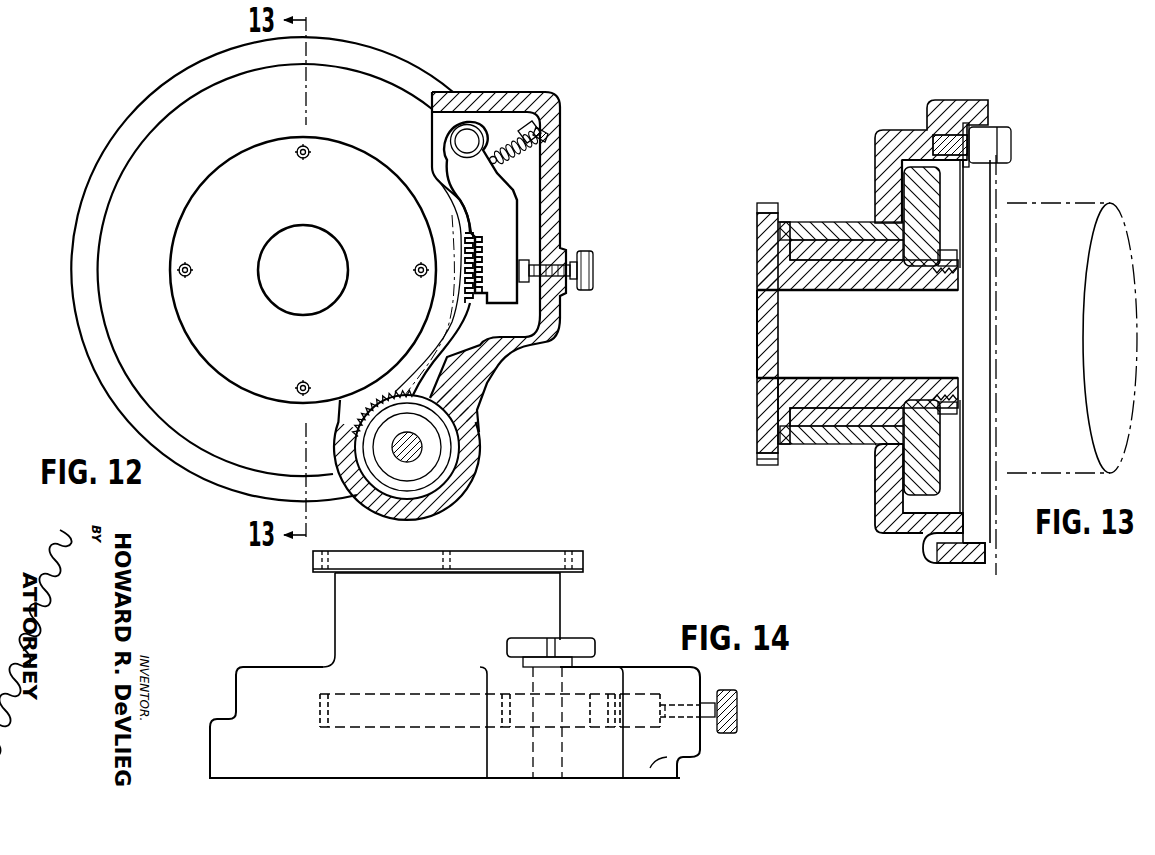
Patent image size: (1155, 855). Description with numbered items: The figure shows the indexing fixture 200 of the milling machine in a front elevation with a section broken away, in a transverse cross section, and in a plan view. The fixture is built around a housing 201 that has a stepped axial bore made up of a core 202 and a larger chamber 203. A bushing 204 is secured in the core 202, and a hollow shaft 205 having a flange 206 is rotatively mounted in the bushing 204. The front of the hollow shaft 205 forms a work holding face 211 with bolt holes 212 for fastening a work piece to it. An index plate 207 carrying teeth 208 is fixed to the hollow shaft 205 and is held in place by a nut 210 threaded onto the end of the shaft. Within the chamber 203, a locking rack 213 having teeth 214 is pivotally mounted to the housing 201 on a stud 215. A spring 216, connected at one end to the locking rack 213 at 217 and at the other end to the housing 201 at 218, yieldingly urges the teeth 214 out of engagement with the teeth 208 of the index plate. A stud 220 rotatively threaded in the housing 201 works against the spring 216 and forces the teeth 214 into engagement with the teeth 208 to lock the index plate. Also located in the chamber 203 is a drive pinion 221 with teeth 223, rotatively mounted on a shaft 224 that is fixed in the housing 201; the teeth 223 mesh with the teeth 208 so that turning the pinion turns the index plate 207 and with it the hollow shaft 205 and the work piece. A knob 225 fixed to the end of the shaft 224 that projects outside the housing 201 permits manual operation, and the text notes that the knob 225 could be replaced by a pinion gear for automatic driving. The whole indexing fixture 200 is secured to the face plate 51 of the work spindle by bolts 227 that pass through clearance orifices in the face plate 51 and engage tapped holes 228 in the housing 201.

In FIG. 13, the face plate 51 is at (990, 385).
In FIG. 12, the indexing fixture 200 is at (537, 371).
In FIG. 13, the indexing fixture 200 is at (722, 308).
In FIG. 13, the housing 201 is at (958, 558).
In FIG. 13, the core 202 is at (805, 242).
In FIG. 12, the chamber 203 is at (528, 188).
In FIG. 13, the chamber 203 is at (950, 187).
In FIG. 13, the bushing 204 is at (832, 252).
In FIG. 13, the hollow shaft 205 is at (773, 272).
In FIG. 12, the flange 206 is at (262, 269).
In FIG. 14, the flange 206 is at (583, 562).
In FIG. 13, the flange 206 is at (778, 203).
In FIG. 13, the index plate 207 is at (915, 188).
In FIG. 12, the teeth 208 is at (482, 343).
In FIG. 13, the teeth 208 is at (882, 524).
In FIG. 13, the nut 210 is at (946, 250).
In FIG. 13, the work holding face 211 is at (757, 396).
In FIG. 12, the bolt holes 212 is at (312, 149).
In FIG. 14, the bolt holes 212 is at (347, 558).
In FIG. 13, the bolt holes 212 is at (757, 453).
In FIG. 12, the locking rack 213 is at (508, 280).
In FIG. 12, the teeth 214 is at (485, 238).
In FIG. 12, the stud 215 is at (468, 126).
In FIG. 12, the spring 216 is at (538, 165).
In FIG. 12, the spring connection on locking rack 217 is at (515, 122).
In FIG. 12, the spring connection on housing 218 is at (546, 136).
In FIG. 12, the stud 220 is at (561, 297).
In FIG. 14, the stud 220 is at (730, 693).
In FIG. 12, the drive pinion 221 is at (434, 463).
In FIG. 12, the teeth 223 is at (355, 468).
In FIG. 12, the shaft 224 is at (423, 445).
In FIG. 14, the knob 225 is at (582, 640).
In FIG. 13, the bolts 227 is at (1012, 133).
In FIG. 13, the tapped holes 228 is at (988, 112).